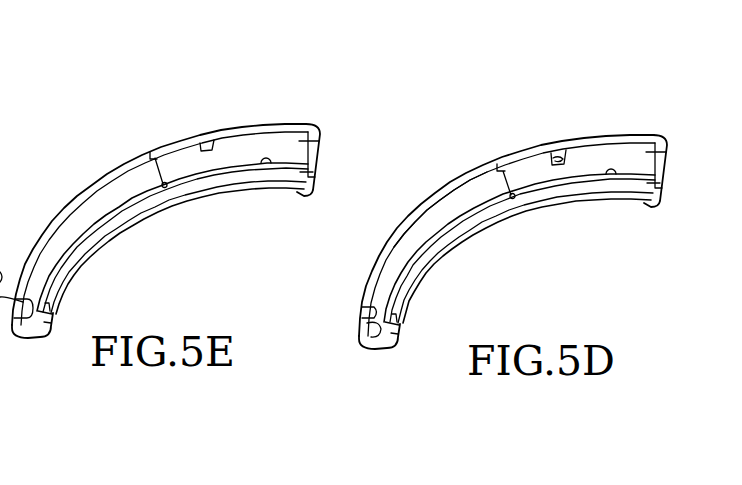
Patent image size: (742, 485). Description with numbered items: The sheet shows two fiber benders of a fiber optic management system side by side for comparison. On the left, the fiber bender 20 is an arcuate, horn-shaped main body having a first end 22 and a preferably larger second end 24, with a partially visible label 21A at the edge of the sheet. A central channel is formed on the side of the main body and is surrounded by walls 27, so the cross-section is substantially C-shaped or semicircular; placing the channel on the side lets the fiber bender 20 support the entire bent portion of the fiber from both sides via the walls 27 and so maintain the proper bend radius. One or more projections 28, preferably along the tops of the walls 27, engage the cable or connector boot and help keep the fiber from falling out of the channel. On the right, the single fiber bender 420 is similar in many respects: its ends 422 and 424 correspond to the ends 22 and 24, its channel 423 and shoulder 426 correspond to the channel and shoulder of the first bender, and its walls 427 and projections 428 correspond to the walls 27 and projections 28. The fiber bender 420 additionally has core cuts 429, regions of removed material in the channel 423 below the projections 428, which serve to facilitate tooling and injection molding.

In FIG. 5E, the fiber bender 20 is at (258, 110).
In FIG. 5E, the handle portion 21A is at (17, 174).
In FIG. 5E, the first end 22 is at (53, 298).
In FIG. 5E, the second end 24 is at (302, 124).
In FIG. 5E, the walls 27 is at (188, 181).
In FIG. 5E, the projections 28 is at (208, 137).
In FIG. 5D, the fiber bender 420 is at (510, 186).
In FIG. 5D, the end 422 is at (417, 326).
In FIG. 5D, the channel 423 is at (440, 194).
In FIG. 5D, the end 424 is at (677, 146).
In FIG. 5D, the shoulder 426 is at (501, 151).
In FIG. 5D, the walls 427 is at (521, 232).
In FIG. 5D, the projections 428 is at (484, 202).
In FIG. 5D, the core cuts 429 is at (454, 268).